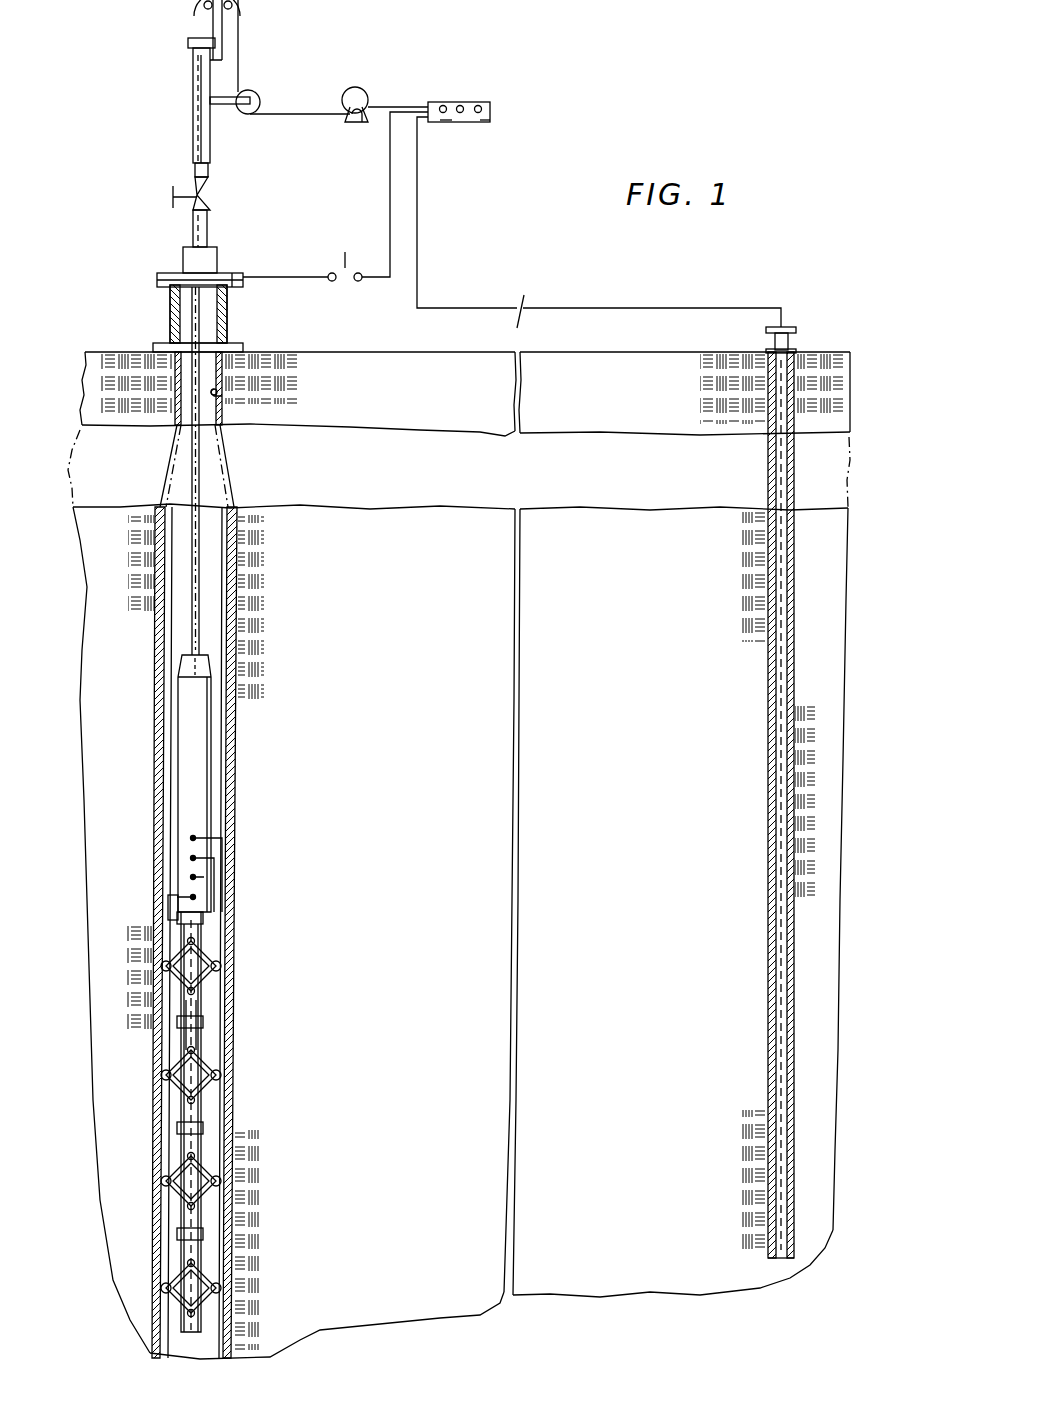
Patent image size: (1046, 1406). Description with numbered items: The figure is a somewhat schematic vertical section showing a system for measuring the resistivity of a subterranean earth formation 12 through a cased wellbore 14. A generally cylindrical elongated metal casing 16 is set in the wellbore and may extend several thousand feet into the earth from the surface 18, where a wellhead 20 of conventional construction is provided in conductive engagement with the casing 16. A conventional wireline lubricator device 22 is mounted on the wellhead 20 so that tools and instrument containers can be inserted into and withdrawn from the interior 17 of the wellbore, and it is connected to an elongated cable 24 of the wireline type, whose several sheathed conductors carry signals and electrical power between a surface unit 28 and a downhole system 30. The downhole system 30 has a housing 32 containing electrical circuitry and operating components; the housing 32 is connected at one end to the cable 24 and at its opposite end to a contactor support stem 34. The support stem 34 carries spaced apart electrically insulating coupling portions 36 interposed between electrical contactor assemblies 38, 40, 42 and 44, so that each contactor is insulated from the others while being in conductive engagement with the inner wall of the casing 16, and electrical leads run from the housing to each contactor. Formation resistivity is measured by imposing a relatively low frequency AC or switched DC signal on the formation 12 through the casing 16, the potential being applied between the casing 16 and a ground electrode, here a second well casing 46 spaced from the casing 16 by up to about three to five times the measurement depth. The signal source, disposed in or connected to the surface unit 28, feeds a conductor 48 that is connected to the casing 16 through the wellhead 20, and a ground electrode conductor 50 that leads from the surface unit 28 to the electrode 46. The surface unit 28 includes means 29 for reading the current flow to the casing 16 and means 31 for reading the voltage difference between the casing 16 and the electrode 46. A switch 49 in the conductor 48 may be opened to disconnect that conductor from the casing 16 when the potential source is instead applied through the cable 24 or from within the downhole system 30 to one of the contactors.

The subterranean earth formation 12 is at (844, 758).
The cased wellbore 14 is at (242, 769).
The casing 16 is at (222, 395).
The wellbore interior 17 is at (185, 398).
The surface 18 is at (344, 352).
The wellhead 20 is at (171, 313).
The wireline lubricator device 22 is at (190, 140).
The cable 24 is at (205, 470).
The surface unit 28 is at (474, 100).
The current reading means 29 is at (445, 122).
The voltage reading means 31 is at (485, 122).
The downhole system 30 is at (220, 826).
The housing 32 is at (207, 712).
The contactor support stem 34 is at (200, 1012).
The electrically insulating coupling portions 36 is at (190, 915).
The electrical contactor assembly 38 is at (215, 992).
The electrical contactor assembly 40 is at (215, 1080).
The electrical contactor assembly 42 is at (215, 1195).
The electrical contactor assembly 44 is at (217, 1300).
The second well casing 46 is at (768, 840).
The conductor 48 is at (390, 196).
The switch 49 is at (335, 260).
The ground electrode conductor 50 is at (417, 188).